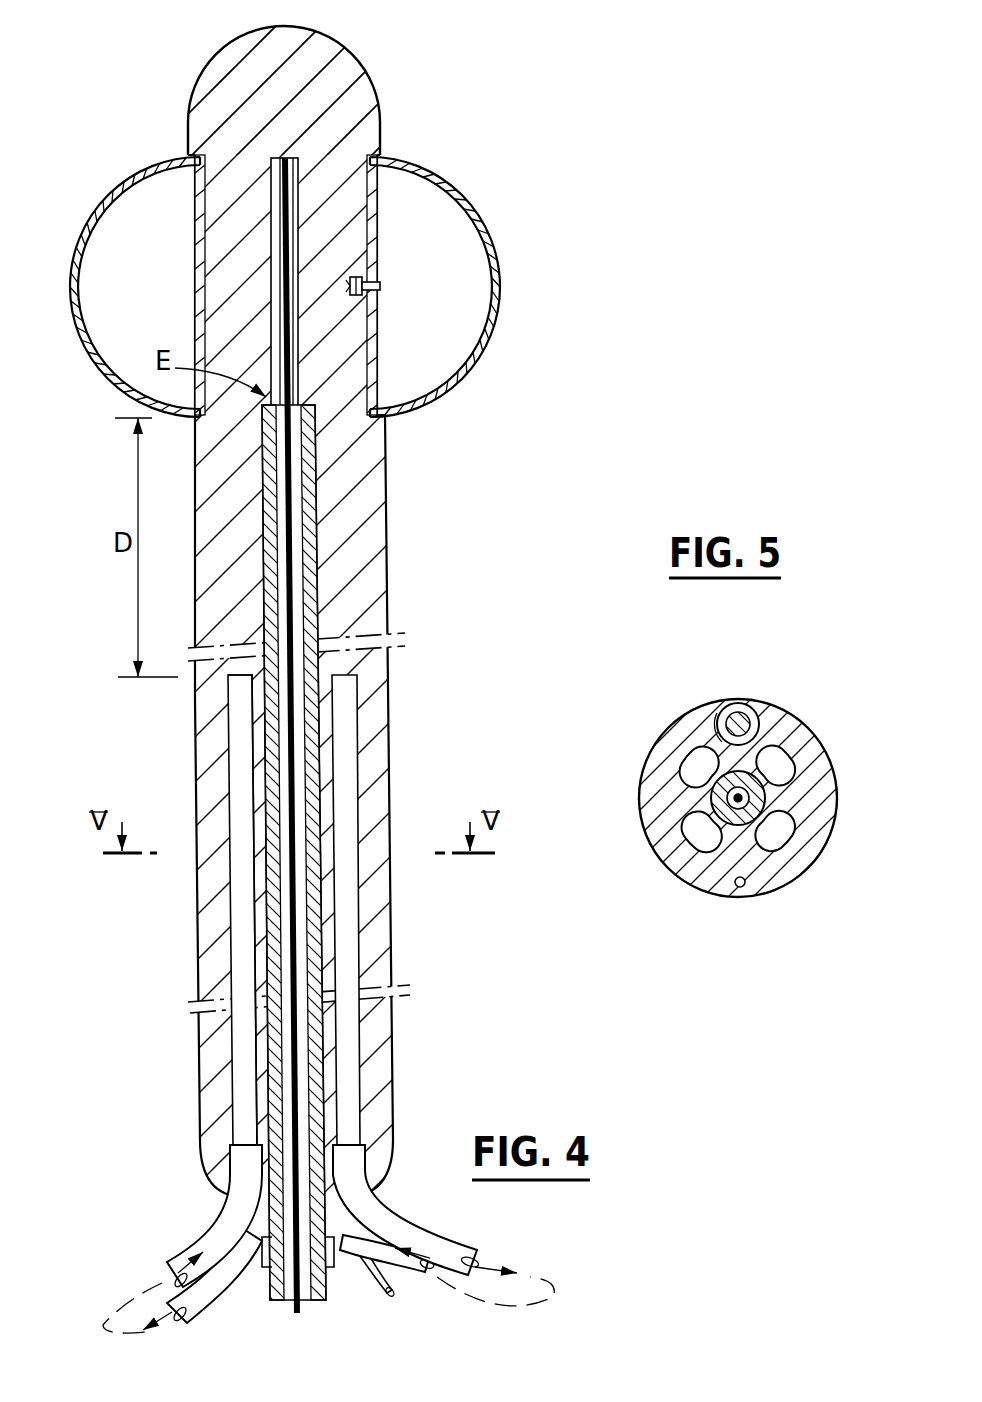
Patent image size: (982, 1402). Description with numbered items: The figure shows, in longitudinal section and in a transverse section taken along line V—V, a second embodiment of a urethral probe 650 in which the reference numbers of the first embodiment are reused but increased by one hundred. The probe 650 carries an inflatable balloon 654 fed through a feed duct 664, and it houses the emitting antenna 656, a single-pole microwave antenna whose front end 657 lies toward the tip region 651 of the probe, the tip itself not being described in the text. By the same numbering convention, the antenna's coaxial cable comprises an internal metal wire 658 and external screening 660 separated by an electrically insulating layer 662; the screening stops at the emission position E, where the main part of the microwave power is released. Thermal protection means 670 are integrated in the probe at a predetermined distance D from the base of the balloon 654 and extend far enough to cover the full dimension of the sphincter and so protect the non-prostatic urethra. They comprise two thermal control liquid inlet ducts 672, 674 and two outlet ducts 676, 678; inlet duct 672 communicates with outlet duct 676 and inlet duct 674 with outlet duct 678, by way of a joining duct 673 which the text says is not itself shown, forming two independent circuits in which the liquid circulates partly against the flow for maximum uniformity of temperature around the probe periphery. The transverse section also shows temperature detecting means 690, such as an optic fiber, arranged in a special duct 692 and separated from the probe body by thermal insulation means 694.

In FIG. 4, the urethral probe 650 is at (396, 935).
In FIG. 5, the urethral probe 650 is at (701, 901).
In FIG. 4, the rounded distal tip 651 is at (272, 53).
In FIG. 4, the inflatable balloon 654 is at (500, 240).
In FIG. 4, the emitting antenna 656 is at (294, 454).
In FIG. 4, the front end of the antenna 657 is at (298, 160).
In FIG. 4, the internal metal wire 658 is at (190, 157).
In FIG. 4, the external screening 660 is at (313, 620).
In FIG. 4, the electrically insulating layer 662 is at (293, 385).
In FIG. 4, the feed duct 664 is at (360, 276).
In FIG. 5, the feed duct 664 is at (739, 888).
In FIG. 4, the thermal protection means 670 is at (244, 753).
In FIG. 4, the thermal control liquid inlet duct 672 is at (242, 915).
In FIG. 5, the thermal control liquid inlet duct 672 is at (695, 828).
In FIG. 4, the joining duct 673 is at (318, 98).
In FIG. 4, the thermal control liquid inlet duct 674 is at (353, 1053).
In FIG. 5, the thermal control liquid inlet duct 674 is at (783, 835).
In FIG. 5, the thermal control liquid outlet duct 676 is at (779, 760).
In FIG. 5, the thermal control liquid outlet duct 678 is at (693, 768).
In FIG. 5, the temperature detecting means 690 is at (738, 712).
In FIG. 5, the special duct 692 is at (714, 728).
In FIG. 5, the thermal insulation means 694 is at (752, 710).